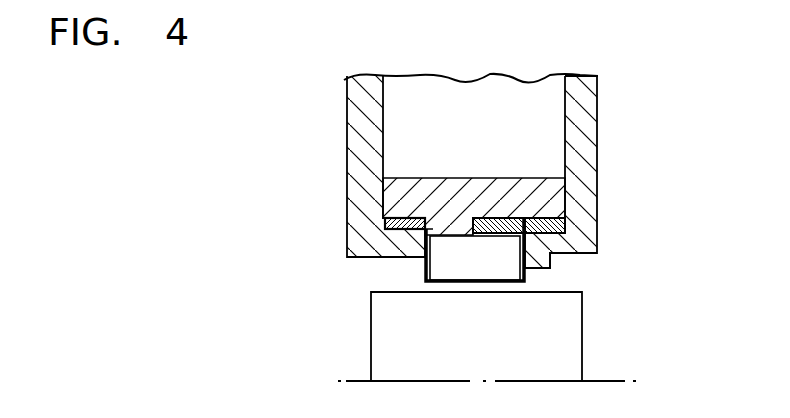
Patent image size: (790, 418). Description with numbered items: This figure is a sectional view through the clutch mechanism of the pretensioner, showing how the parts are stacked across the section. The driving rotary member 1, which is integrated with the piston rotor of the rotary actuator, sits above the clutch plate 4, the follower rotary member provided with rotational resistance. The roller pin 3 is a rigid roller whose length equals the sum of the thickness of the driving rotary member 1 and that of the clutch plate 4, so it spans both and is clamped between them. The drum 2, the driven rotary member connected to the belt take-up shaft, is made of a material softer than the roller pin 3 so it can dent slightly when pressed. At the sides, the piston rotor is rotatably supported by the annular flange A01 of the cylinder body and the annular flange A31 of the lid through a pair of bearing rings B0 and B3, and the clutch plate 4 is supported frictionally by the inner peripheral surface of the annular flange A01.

The driving rotary member 1 is at (424, 255).
The drum 2 is at (566, 346).
The roller pin 3 is at (453, 270).
The clutch plate 4 is at (507, 218).
The bearing ring B3 is at (393, 215).
The bearing ring B0 is at (557, 208).
The annular flange A01 is at (563, 248).
The annular flange A31 is at (397, 255).